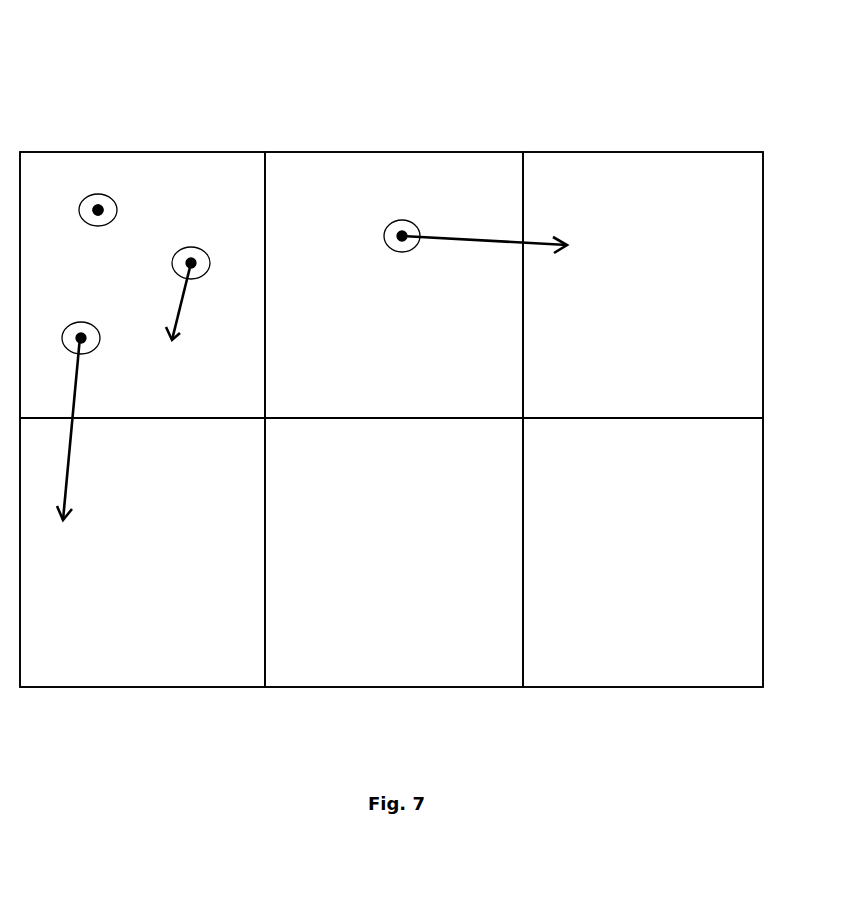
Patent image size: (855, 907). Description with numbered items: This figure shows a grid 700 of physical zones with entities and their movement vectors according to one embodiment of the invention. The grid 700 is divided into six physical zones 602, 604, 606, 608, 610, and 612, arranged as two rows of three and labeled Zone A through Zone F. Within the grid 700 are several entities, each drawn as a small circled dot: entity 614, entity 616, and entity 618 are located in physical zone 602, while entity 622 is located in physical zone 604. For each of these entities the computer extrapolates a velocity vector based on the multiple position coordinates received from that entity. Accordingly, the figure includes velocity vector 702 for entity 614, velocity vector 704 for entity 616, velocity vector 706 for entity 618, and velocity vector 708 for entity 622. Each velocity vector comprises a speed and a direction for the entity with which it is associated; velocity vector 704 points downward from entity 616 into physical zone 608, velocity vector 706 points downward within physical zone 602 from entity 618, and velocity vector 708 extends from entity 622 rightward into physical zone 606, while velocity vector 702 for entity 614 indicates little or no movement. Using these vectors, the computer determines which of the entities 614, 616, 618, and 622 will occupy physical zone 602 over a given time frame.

The grid 700 is at (397, 68).
The physical zone 602 is at (133, 152).
The physical zone 604 is at (396, 152).
The physical zone 606 is at (643, 152).
The physical zone 608 is at (133, 687).
The physical zone 610 is at (396, 687).
The physical zone 612 is at (643, 687).
The entity 614 is at (100, 225).
The entity 616 is at (72, 318).
The entity 618 is at (193, 245).
The entity 622 is at (412, 247).
The velocity vector 702 is at (103, 206).
The velocity vector 704 is at (78, 378).
The velocity vector 706 is at (192, 285).
The velocity vector 708 is at (470, 243).